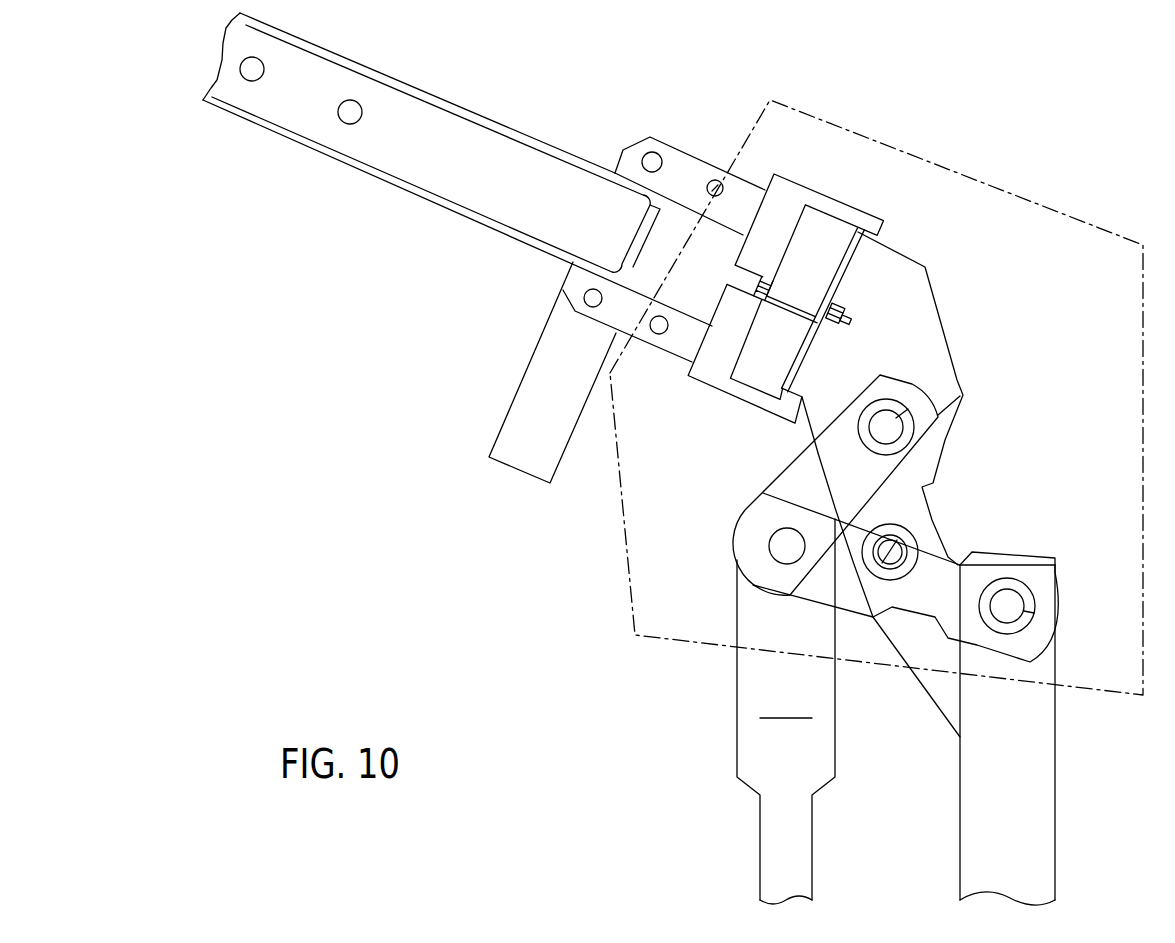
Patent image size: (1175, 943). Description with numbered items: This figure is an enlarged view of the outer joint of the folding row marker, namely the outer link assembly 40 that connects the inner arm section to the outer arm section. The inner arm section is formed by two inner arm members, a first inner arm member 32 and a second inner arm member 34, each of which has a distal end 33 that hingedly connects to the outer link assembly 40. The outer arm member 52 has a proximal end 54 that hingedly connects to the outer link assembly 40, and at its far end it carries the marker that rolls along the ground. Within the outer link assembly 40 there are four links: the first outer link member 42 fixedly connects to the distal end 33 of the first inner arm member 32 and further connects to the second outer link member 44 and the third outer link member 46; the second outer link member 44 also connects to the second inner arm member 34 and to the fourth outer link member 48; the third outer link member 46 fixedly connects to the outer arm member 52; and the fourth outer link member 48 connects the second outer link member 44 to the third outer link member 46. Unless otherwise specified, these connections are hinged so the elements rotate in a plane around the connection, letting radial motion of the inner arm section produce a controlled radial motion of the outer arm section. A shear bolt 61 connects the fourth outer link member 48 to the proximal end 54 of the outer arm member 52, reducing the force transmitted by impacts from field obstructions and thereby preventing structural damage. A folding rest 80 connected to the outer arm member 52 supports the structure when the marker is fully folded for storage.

The first inner arm member 32 is at (1057, 807).
The distal end 33 is at (835, 682).
The second inner arm member 34 is at (758, 828).
The outer link assembly 40 is at (1043, 207).
The first outer link member 42 is at (1043, 645).
The second outer link member 44 is at (917, 383).
The third outer link member 46 is at (815, 190).
The fourth outer link member 48 is at (923, 268).
The outer arm member 52 is at (487, 224).
The proximal end 54 is at (723, 397).
The shear bolt 61 is at (757, 284).
The folding rest 80 is at (517, 472).